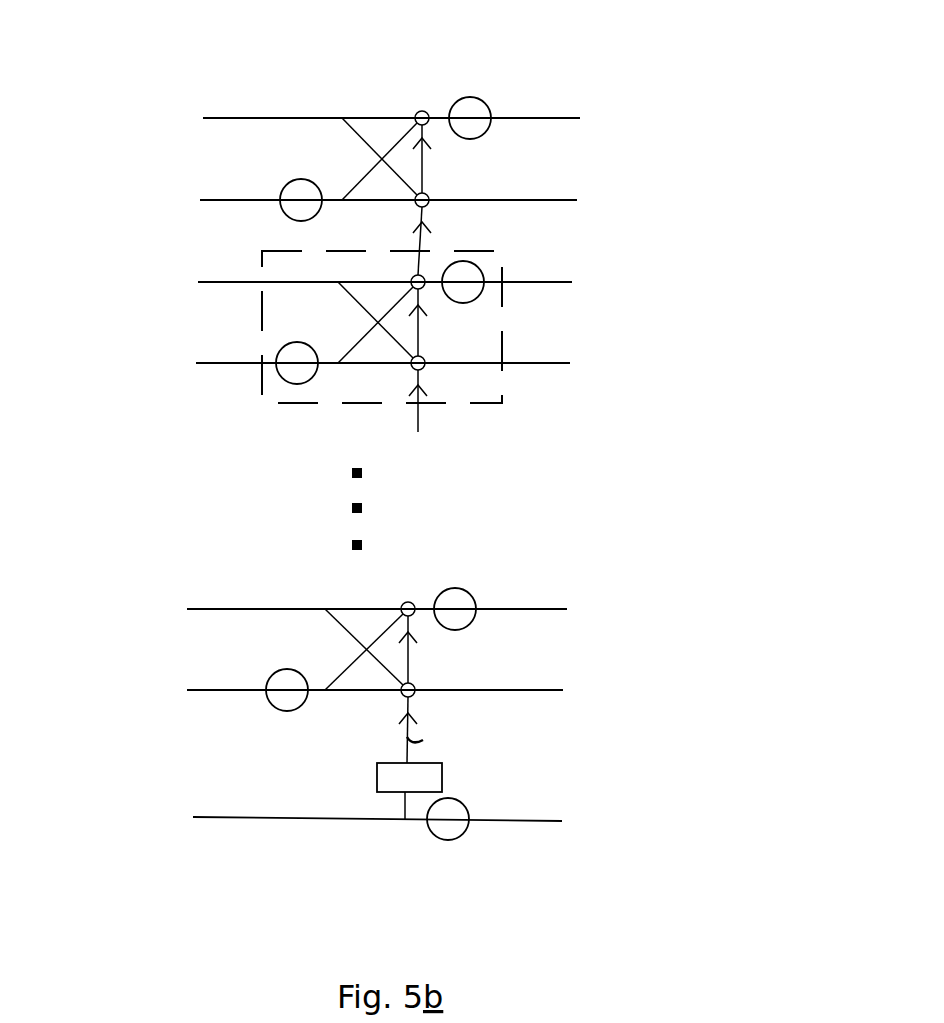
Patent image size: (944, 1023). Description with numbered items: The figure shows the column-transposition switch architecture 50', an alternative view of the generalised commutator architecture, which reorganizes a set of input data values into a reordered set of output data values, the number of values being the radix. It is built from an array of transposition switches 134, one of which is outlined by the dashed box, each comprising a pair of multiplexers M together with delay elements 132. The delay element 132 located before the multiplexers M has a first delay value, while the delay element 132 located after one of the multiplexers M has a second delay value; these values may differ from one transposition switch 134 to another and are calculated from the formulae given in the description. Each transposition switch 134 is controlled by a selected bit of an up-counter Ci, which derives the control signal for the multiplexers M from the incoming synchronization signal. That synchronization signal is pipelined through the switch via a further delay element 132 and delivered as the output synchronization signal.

The delay element 132 is at (407, 467).
The transposition switch 134 is at (256, 405).
The column-transposition switch architecture 50' is at (455, 437).
The multiplexer M is at (461, 384).
The up-counter Ci is at (377, 778).